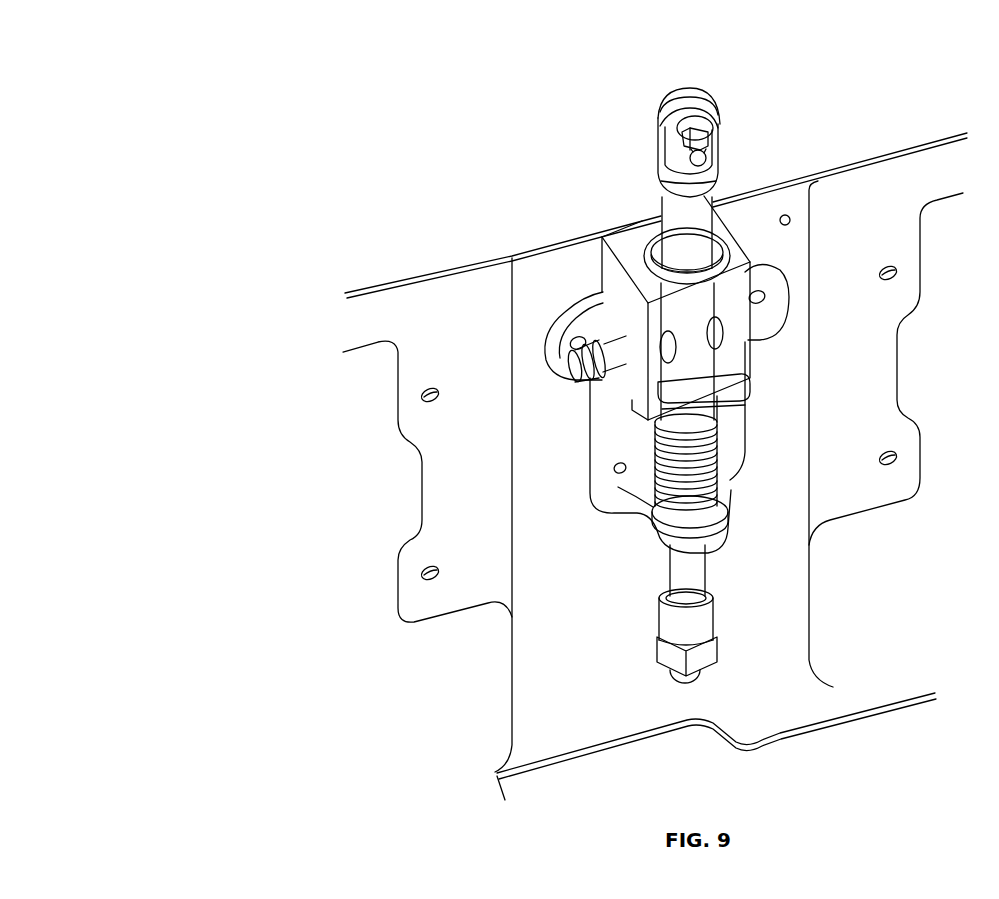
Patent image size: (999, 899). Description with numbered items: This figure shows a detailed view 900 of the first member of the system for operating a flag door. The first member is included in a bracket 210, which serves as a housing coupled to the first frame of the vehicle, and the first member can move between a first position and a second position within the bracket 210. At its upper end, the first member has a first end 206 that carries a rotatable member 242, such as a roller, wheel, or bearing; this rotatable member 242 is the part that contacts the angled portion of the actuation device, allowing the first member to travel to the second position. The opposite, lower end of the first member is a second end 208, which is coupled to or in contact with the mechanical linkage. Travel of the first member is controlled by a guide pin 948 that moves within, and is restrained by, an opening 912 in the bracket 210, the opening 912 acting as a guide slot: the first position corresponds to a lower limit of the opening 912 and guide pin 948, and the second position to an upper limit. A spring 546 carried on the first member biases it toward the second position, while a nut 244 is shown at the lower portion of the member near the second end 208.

The steering column mounting assembly 900 is at (120, 104).
The first end 206 is at (683, 85).
The rotatable member 242 is at (710, 103).
The opening 912 is at (627, 302).
The guide pin 948 is at (620, 367).
The bracket 210 is at (612, 498).
The spring 546 is at (712, 503).
The nut 244 is at (707, 642).
The second end 208 is at (687, 683).